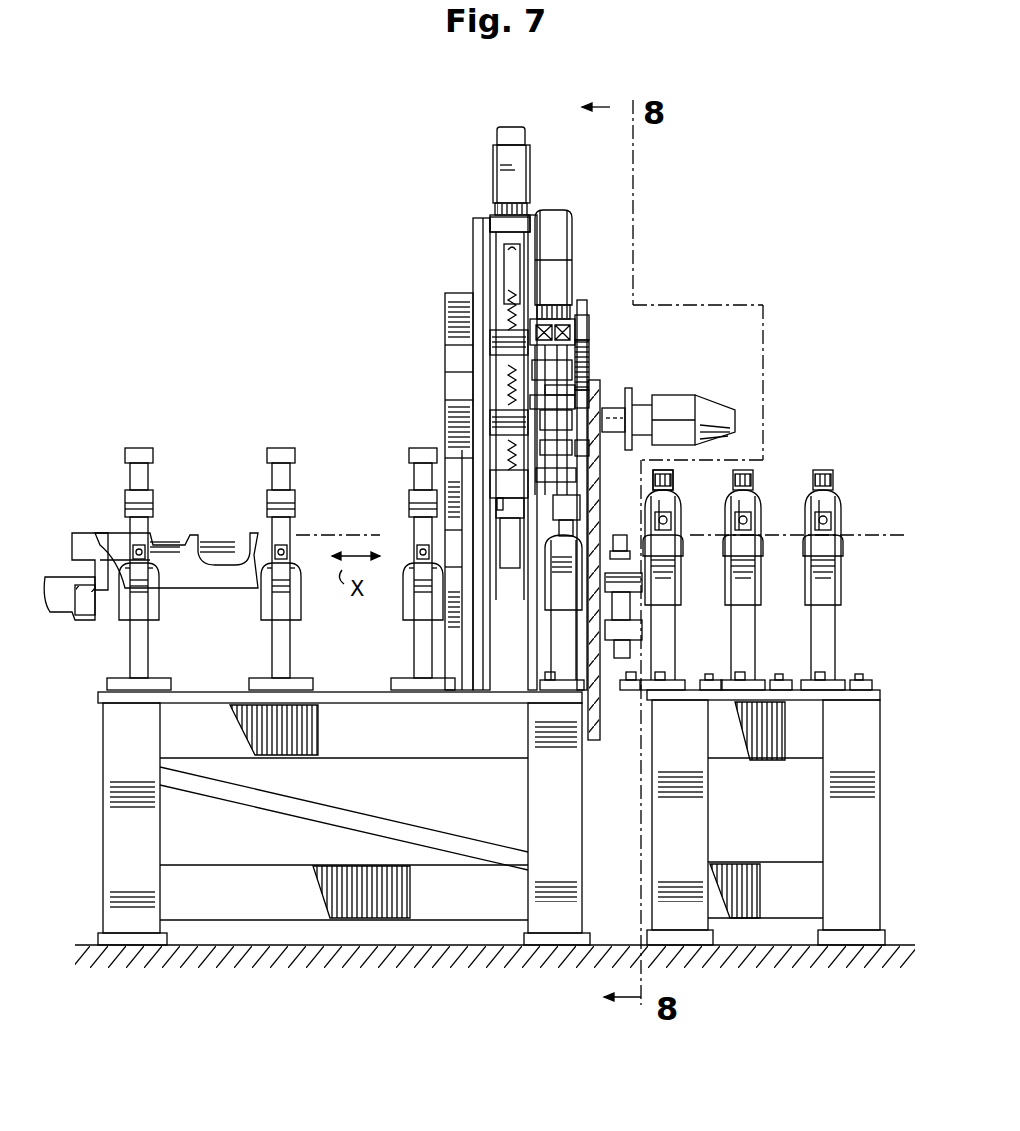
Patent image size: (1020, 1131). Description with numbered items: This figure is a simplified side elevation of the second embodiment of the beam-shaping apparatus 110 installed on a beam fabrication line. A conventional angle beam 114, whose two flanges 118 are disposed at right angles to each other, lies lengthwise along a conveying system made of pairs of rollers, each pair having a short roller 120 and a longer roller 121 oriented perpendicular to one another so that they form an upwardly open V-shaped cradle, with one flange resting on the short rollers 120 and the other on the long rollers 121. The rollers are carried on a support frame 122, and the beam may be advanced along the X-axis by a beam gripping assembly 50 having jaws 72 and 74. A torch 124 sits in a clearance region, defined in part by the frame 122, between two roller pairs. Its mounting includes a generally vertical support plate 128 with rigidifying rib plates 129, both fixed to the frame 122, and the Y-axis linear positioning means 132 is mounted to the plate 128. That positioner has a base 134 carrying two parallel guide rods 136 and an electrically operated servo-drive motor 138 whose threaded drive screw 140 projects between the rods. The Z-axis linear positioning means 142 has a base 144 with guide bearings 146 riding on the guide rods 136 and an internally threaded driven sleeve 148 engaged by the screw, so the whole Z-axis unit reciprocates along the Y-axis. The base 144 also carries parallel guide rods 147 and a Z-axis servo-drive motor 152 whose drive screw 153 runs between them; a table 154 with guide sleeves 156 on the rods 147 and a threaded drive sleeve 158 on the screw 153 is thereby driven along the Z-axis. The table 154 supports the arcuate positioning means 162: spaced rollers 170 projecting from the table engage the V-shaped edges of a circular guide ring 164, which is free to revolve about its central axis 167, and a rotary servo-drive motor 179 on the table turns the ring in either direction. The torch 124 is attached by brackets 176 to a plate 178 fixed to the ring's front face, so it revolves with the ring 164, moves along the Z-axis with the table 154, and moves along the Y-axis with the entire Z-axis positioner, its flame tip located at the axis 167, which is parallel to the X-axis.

The beam gripping assembly 50 is at (58, 617).
The jaw 72 is at (98, 598).
The jaw 74 is at (88, 540).
The apparatus 110 is at (390, 234).
The angle beam 114 is at (118, 537).
The flanges 118 is at (163, 538).
The short roller 120 is at (840, 572).
The long roller 121 is at (834, 503).
The support frame 122 is at (642, 829).
The torch 124 is at (592, 547).
The support plate 128 is at (475, 610).
The rib plates 129 is at (460, 345).
The Y-axis linear positioning means 132 is at (486, 204).
The base 134 is at (480, 240).
The guide rods 136 is at (500, 385).
The servo-drive motor 138 is at (510, 135).
The drive screw 140 is at (506, 302).
The Z-axis linear positioning means 142 is at (580, 294).
The base 144 is at (528, 528).
The guide bearings 146 is at (504, 345).
The guide rods 147 is at (560, 395).
The driven sleeve 148 is at (510, 511).
The servo-drive motor 152 is at (564, 215).
The drive screw 153 is at (593, 353).
The table 154 is at (586, 317).
The guide sleeves 156 is at (573, 399).
The drive sleeve 158 is at (640, 453).
The arcuate positioning means 162 is at (594, 402).
The guide ring 164 is at (589, 338).
The central axis 167 is at (306, 534).
The rollers 170 is at (562, 392).
The brackets 176 is at (602, 660).
The plate 178 is at (598, 732).
The rotary servo-drive motor 179 is at (695, 398).